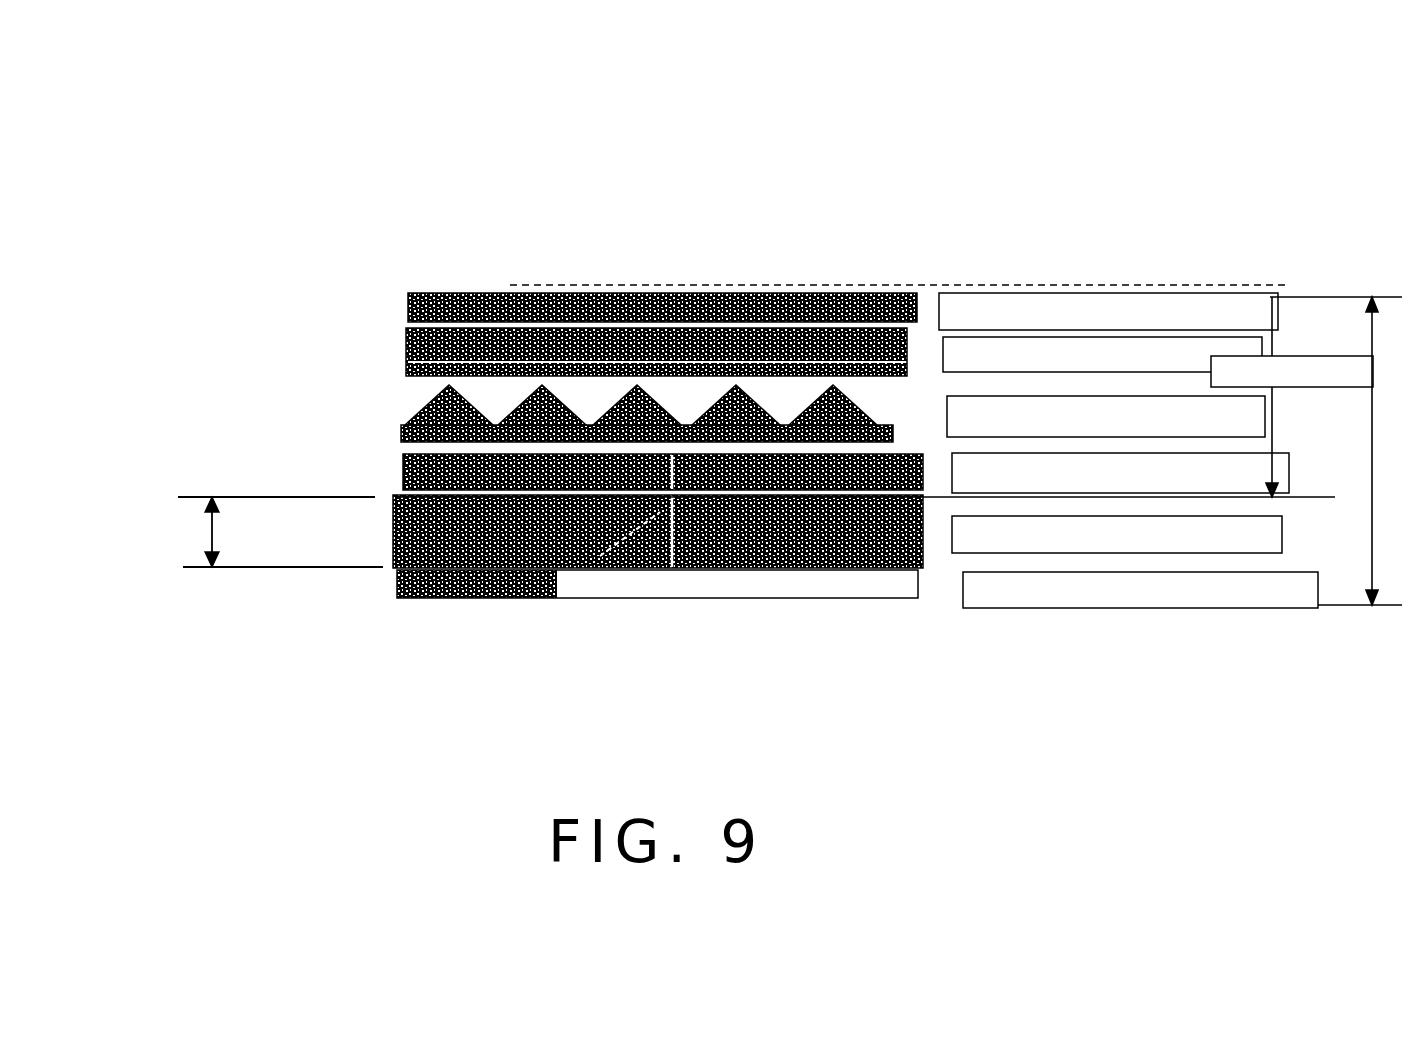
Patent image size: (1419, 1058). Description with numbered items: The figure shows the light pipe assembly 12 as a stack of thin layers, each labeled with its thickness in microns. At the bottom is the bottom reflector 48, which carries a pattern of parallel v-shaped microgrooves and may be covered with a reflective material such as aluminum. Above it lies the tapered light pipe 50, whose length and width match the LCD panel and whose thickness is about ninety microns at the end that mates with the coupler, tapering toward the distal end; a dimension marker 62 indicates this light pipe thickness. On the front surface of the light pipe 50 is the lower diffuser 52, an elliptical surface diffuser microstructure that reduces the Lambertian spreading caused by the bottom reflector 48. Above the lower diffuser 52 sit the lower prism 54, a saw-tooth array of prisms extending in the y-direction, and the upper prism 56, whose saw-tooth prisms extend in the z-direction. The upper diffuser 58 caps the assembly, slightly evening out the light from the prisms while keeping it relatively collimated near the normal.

The light pipe assembly 12 is at (684, 122).
The bottom reflector 48 is at (712, 608).
The light pipe 50 is at (388, 530).
The lower diffuser 52 is at (403, 468).
The lower prism 54 is at (401, 428).
The upper prism 56 is at (406, 348).
The upper diffuser 58 is at (407, 308).
The lightpipe thickness 62 is at (203, 530).